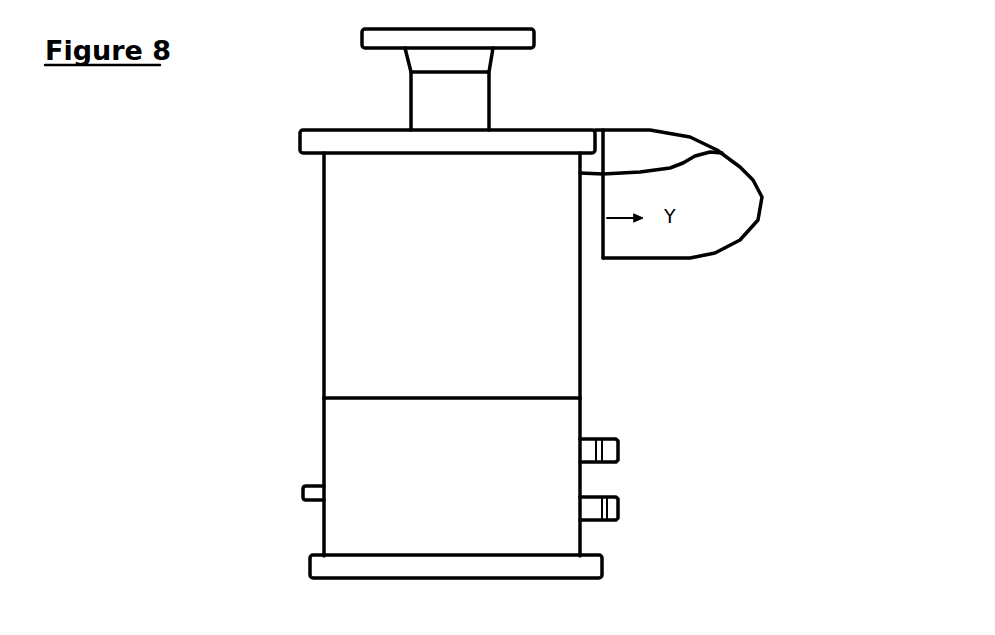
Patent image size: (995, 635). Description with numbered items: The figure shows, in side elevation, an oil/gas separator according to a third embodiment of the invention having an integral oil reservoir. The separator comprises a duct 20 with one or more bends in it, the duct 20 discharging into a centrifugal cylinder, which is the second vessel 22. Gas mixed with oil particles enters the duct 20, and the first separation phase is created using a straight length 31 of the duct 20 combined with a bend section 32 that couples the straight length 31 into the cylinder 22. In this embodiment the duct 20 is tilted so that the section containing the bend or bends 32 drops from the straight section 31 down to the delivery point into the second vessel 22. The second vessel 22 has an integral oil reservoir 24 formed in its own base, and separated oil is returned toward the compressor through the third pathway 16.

The third pathway 16 is at (303, 493).
The duct 20 is at (650, 128).
The centrifugal cylinder 22 is at (322, 228).
The integral oil reservoir 24 is at (325, 438).
The straight length 31 is at (360, 128).
The bend section 32 is at (762, 178).